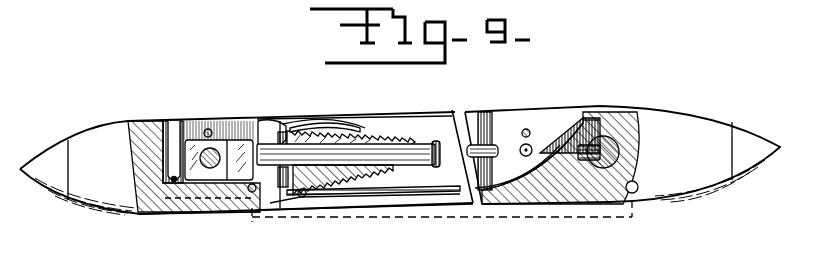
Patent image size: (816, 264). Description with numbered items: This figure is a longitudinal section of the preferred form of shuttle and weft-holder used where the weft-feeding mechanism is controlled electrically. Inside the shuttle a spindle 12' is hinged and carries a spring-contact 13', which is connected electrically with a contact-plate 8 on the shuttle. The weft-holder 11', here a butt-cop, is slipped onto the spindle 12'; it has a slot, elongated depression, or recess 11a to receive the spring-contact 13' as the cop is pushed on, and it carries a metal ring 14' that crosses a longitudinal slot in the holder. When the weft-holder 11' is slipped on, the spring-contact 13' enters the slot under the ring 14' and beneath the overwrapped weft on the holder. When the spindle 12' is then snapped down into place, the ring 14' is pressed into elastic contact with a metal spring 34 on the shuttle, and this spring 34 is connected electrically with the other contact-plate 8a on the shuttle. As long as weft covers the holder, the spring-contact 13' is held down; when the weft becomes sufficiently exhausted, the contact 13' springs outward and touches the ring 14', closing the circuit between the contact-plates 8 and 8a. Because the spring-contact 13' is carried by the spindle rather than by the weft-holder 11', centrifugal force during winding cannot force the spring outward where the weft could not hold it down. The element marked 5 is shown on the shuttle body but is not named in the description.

The metal ring 14' is at (354, 113).
The spring-contact 13' is at (351, 111).
The recess 11a is at (358, 130).
The spindle 12' is at (351, 122).
The weft-holder 11' is at (343, 209).
The bolt 5 is at (640, 112).
The metal spring 34 is at (277, 210).
The contact-plate 8 is at (170, 212).
The contact-plate 8a is at (634, 193).